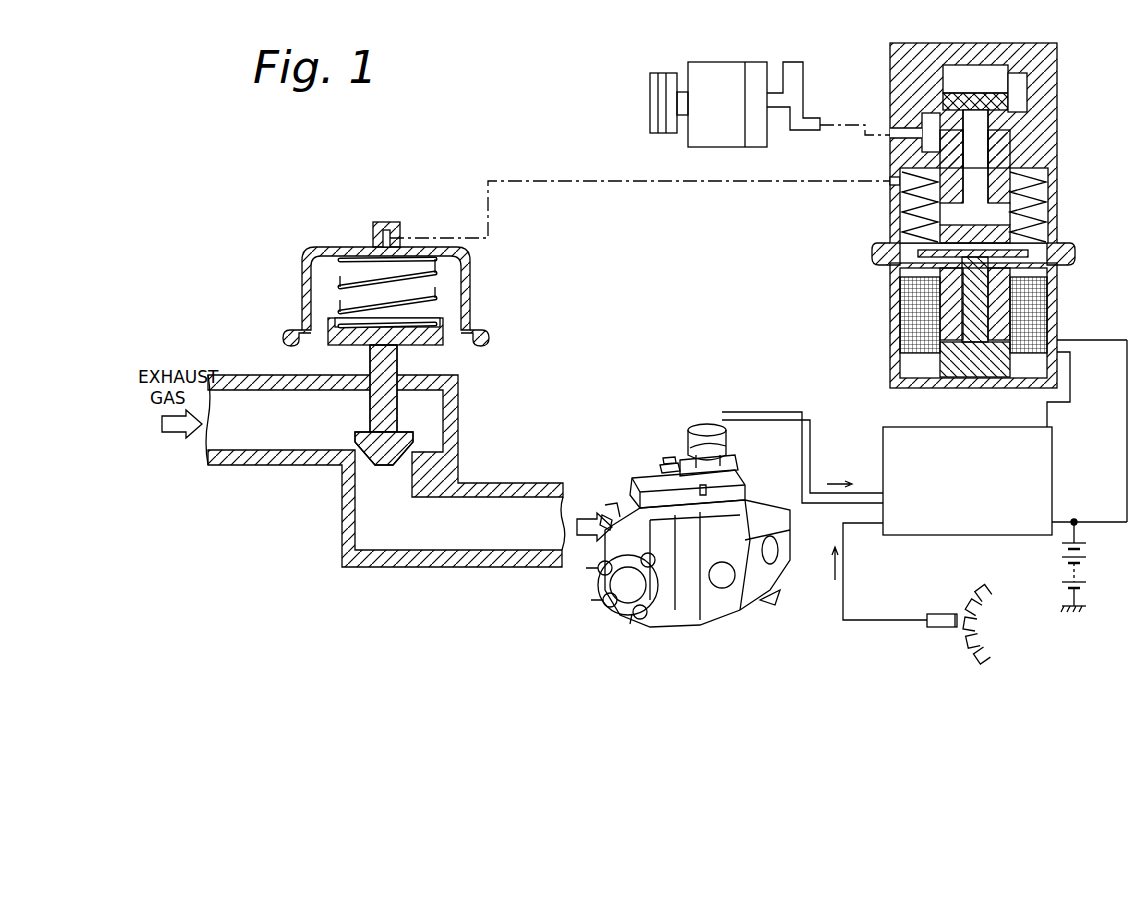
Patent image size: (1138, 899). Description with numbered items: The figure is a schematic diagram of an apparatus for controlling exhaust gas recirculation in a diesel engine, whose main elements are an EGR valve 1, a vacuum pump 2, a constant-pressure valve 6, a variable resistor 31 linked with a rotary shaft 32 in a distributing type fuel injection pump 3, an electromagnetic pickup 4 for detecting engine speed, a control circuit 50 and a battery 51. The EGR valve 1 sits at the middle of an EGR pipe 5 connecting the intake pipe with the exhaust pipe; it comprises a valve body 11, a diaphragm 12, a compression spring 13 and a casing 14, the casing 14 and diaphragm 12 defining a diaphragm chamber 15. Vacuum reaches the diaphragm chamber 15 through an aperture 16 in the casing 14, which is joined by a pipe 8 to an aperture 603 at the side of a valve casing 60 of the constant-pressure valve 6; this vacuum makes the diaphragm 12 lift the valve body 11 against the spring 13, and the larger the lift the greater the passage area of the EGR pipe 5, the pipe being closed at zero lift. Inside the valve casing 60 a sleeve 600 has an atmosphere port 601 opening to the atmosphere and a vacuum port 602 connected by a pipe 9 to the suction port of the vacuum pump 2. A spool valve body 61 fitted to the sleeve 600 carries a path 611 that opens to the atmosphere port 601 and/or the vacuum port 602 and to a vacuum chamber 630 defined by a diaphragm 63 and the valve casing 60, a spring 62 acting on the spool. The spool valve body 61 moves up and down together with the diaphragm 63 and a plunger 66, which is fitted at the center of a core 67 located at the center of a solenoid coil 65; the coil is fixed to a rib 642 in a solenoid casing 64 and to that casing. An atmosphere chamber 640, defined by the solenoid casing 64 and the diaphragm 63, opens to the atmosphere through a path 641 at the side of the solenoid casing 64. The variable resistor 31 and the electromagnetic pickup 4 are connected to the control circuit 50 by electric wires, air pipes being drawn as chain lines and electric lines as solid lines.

The EGR valve 1 is at (380, 280).
The valve body 11 is at (410, 438).
The diaphragm 12 is at (445, 338).
The compression spring 13 is at (440, 276).
The casing 14 is at (303, 301).
The diaphragm chamber 15 is at (312, 266).
The aperture 16 is at (399, 228).
The vacuum pump 2 is at (794, 62).
The distributing type fuel injection pump 3 is at (688, 497).
The variable resistor 31 is at (705, 424).
The rotary shaft 32 is at (690, 448).
The electromagnetic pickup 4 is at (935, 628).
The EGR pipe 5 is at (502, 492).
The control circuit 50 is at (1055, 480).
The battery 51 is at (1088, 555).
The constant-pressure valve 6 is at (965, 212).
The valve casing 60 is at (1055, 50).
The sleeve 600 is at (977, 70).
The spool valve body 61 is at (1005, 82).
The atmosphere port 601 is at (1020, 92).
The vacuum port 602 is at (925, 120).
The aperture 603 is at (888, 183).
The path 611 is at (1003, 118).
The spring 62 is at (1033, 167).
The vacuum chamber 630 is at (1043, 197).
The diaphragm 63 is at (1045, 218).
The atmosphere chamber 640 is at (1063, 249).
The path 641 is at (1045, 258).
The solenoid casing 64 is at (1050, 283).
The solenoid coil 65 is at (1040, 318).
The rib 642 is at (896, 276).
The core 67 is at (945, 328).
The plunger 66 is at (900, 378).
The pipe 8 is at (676, 184).
The pipe 9 is at (851, 136).